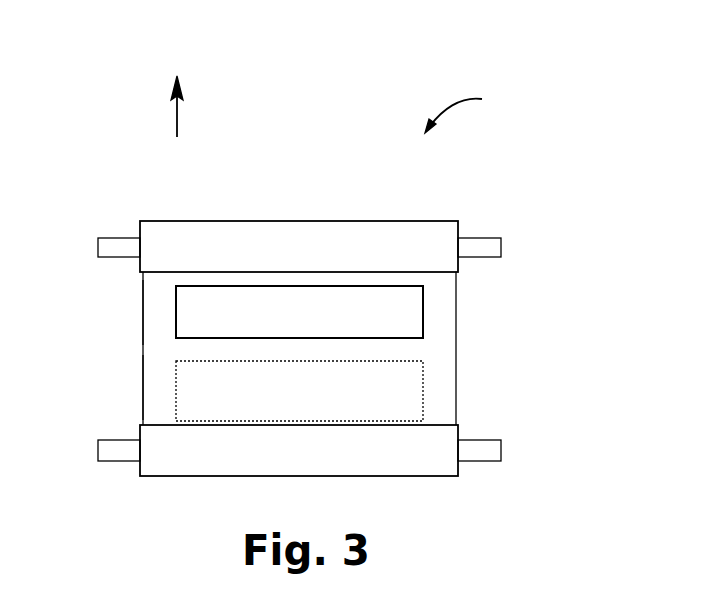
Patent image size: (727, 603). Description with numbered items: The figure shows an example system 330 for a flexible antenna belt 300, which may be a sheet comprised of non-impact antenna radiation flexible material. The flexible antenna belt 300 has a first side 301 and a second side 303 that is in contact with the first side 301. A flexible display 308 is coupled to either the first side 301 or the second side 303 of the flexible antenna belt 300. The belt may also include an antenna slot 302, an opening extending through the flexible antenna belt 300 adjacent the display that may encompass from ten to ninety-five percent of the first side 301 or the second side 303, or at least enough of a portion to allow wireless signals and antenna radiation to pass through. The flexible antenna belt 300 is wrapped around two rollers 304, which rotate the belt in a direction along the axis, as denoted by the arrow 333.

The flexible antenna belt 300 is at (286, 221).
The first side 301 is at (163, 310).
The antenna slot 302 is at (408, 324).
The second side 303 is at (163, 382).
The rollers 304 is at (503, 244).
The flexible display 308 is at (408, 392).
The system 330 is at (475, 109).
The arrow 333 is at (176, 94).